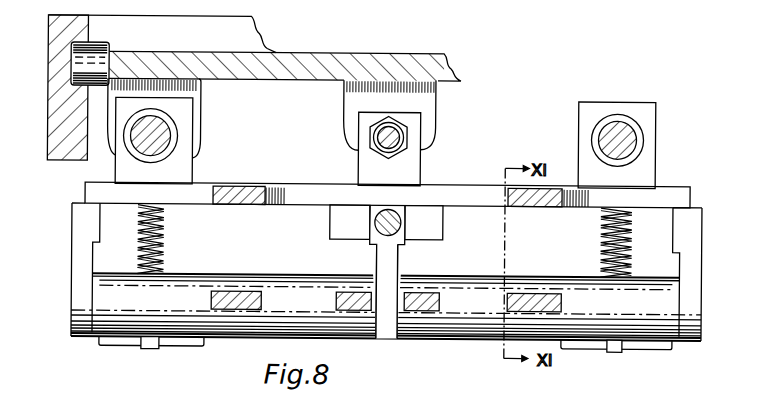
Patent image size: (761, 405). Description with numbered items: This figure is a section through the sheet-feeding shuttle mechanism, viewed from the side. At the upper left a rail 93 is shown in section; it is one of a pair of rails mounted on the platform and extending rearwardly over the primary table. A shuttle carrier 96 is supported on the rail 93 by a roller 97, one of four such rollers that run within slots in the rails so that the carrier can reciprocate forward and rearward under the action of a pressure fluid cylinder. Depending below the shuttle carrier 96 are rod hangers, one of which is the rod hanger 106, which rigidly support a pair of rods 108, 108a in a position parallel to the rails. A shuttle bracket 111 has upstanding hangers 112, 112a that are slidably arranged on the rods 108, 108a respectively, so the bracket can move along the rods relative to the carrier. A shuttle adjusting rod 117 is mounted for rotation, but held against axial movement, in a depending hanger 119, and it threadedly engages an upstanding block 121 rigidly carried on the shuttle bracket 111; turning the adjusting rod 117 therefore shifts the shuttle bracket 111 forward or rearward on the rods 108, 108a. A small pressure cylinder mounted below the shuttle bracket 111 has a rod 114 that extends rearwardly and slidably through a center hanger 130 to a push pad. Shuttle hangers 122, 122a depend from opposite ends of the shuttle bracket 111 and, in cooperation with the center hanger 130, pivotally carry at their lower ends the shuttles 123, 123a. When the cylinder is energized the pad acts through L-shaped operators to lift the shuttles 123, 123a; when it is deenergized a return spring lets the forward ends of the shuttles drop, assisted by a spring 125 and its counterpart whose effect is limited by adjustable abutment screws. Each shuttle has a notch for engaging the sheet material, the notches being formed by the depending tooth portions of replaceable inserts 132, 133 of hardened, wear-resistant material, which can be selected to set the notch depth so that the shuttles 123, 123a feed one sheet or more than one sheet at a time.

The rail 93 is at (52, 100).
The shuttle carrier 96 is at (338, 60).
The roller 97 is at (108, 53).
The rod hanger 106 is at (199, 118).
The rod 108 is at (157, 148).
The rod 108a is at (628, 141).
The shuttle bracket 111 is at (291, 182).
The upstanding hanger 112 is at (186, 142).
The upstanding hanger 112a is at (650, 118).
The rod 114 is at (398, 225).
The shuttle adjusting rod 117 is at (400, 140).
The depending hanger 119 is at (435, 104).
The upstanding block 121 is at (412, 170).
The shuttle hanger 122 is at (85, 259).
The shuttle hanger 122a is at (692, 240).
The shuttle 123 is at (218, 275).
The shuttle 123a is at (580, 279).
The spring 125 is at (164, 224).
The center hanger 130 is at (392, 265).
The replaceable insert 132 is at (157, 348).
The replaceable insert 133 is at (614, 349).